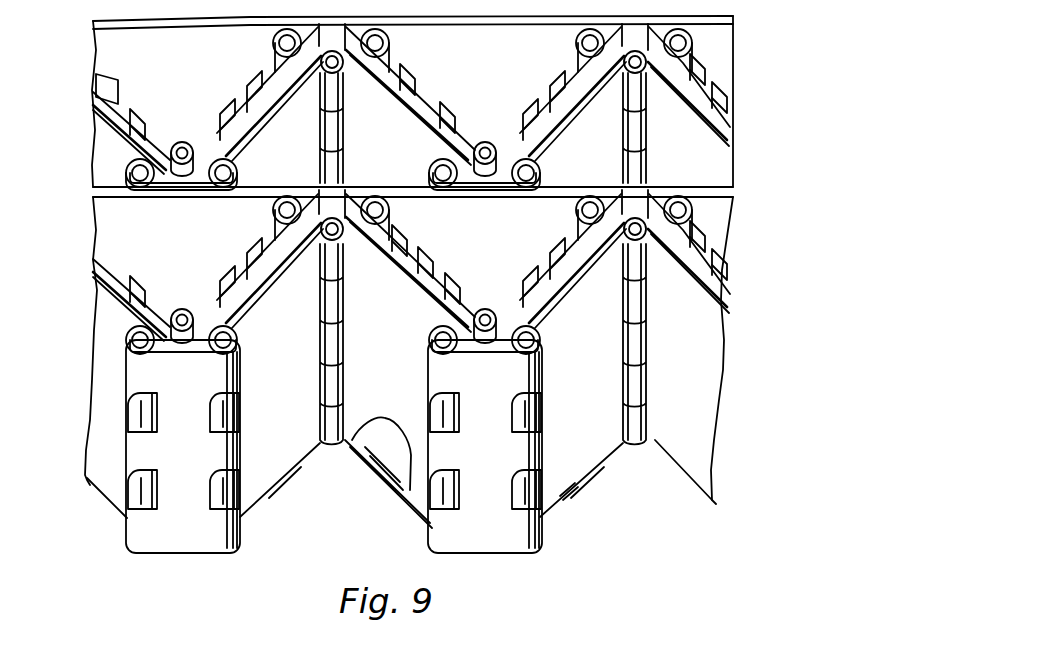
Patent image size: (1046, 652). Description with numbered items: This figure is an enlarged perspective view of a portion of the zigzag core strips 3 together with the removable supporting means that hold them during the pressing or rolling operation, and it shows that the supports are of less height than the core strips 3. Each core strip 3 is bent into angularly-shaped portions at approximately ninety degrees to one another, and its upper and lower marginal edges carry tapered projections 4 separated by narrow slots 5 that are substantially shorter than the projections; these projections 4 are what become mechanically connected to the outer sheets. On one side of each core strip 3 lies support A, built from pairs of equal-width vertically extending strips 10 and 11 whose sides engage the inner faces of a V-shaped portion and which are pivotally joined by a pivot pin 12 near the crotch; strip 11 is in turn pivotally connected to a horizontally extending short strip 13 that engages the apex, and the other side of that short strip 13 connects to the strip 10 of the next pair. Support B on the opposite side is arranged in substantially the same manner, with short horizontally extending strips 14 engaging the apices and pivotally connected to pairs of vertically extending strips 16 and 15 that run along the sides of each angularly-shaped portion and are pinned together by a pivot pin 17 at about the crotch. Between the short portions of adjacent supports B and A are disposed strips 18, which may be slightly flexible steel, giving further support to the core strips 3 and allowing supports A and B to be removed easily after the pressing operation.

The core strip 3 is at (400, 460).
The tapered projection 4 is at (103, 90).
The slot 5 is at (448, 307).
The strip of support A 10 is at (143, 143).
The strip of support A 11 is at (260, 102).
The pivot pin 12 is at (183, 148).
The short strip 13 is at (280, 38).
The short strip 14 is at (182, 188).
The vertically extending strip 15 is at (123, 147).
The vertically extending strip 16 is at (279, 107).
The pivot pin 17 is at (330, 233).
The strip 18 is at (465, 193).
The support A is at (214, 128).
The support B is at (264, 131).